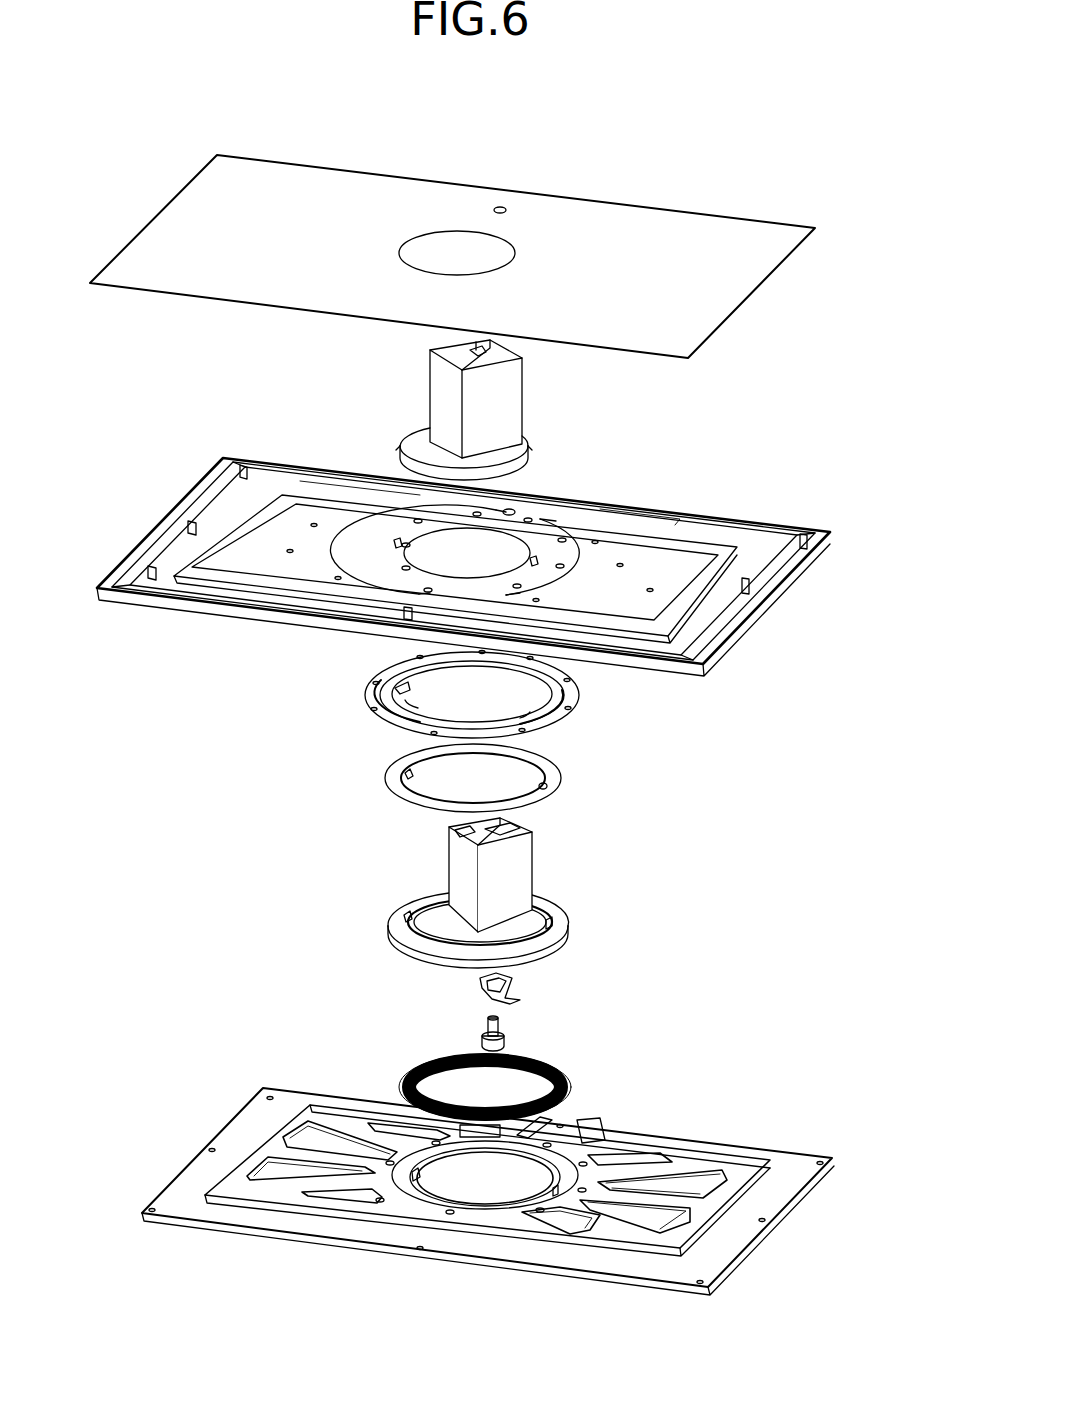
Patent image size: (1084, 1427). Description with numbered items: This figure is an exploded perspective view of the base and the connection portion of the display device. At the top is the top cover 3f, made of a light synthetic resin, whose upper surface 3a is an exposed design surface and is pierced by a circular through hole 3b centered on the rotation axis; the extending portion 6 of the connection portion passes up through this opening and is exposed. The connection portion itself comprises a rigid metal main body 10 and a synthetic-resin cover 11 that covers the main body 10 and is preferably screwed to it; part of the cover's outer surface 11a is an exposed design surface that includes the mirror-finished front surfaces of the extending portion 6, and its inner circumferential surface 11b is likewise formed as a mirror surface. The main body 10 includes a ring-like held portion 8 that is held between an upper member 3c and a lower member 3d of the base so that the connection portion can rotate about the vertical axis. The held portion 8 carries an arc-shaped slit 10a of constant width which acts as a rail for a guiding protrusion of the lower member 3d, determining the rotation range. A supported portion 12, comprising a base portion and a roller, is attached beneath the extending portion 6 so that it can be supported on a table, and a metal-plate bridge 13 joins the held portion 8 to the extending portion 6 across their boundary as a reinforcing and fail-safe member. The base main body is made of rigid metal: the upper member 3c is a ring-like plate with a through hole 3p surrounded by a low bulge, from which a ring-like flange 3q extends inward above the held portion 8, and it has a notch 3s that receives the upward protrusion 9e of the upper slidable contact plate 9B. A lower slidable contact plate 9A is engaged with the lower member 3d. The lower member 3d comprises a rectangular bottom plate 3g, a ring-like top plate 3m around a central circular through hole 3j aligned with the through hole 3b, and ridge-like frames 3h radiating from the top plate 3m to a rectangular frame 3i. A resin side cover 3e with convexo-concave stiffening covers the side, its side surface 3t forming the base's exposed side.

The top cover 3f is at (469, 239).
The upper surface 3a is at (645, 240).
The through hole 3b is at (468, 238).
The cover 11 is at (466, 409).
The outer surface 11a is at (443, 409).
The inner circumferential surface 11b is at (412, 441).
The side cover 3e is at (494, 570).
The side surface 3t is at (142, 604).
The upper member 3c is at (494, 709).
The notch 3s is at (404, 686).
The through hole 3p is at (378, 696).
The flange 3q is at (542, 708).
The upper slidable contact plate 9B is at (440, 779).
The protrusion 9e is at (402, 772).
The extending portion 6 is at (540, 850).
The main body 10 is at (541, 899).
The slit 10a is at (408, 914).
The held portion 8 is at (562, 940).
The bridge 13 is at (470, 982).
The supported portion 12 is at (508, 1026).
The lower slidable contact plate 9A is at (550, 1059).
The lower member 3d is at (513, 1184).
The bottom plate 3g is at (170, 1196).
The rectangular frame 3i is at (284, 1122).
The through hole 3j is at (436, 1197).
The frames 3h is at (375, 1133).
The top plate 3m is at (596, 1166).